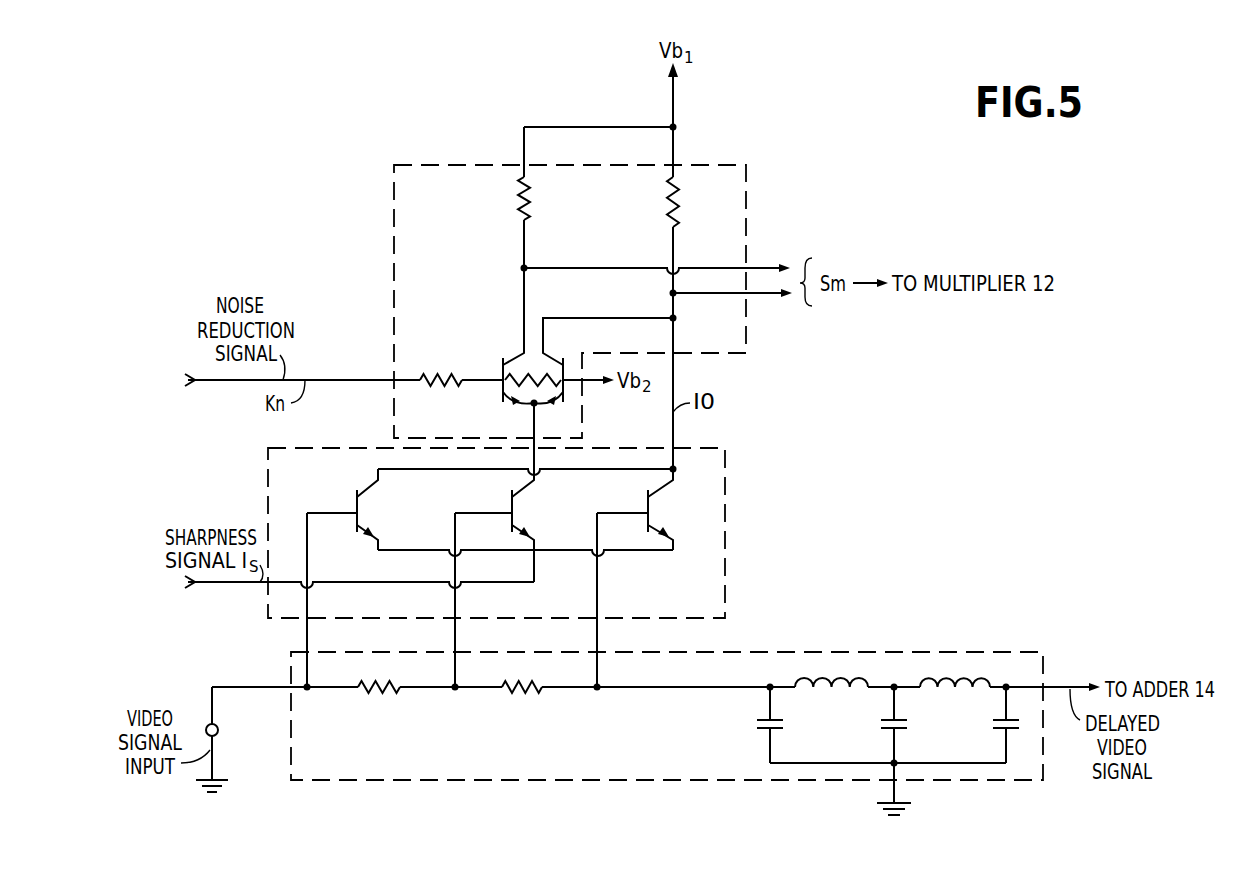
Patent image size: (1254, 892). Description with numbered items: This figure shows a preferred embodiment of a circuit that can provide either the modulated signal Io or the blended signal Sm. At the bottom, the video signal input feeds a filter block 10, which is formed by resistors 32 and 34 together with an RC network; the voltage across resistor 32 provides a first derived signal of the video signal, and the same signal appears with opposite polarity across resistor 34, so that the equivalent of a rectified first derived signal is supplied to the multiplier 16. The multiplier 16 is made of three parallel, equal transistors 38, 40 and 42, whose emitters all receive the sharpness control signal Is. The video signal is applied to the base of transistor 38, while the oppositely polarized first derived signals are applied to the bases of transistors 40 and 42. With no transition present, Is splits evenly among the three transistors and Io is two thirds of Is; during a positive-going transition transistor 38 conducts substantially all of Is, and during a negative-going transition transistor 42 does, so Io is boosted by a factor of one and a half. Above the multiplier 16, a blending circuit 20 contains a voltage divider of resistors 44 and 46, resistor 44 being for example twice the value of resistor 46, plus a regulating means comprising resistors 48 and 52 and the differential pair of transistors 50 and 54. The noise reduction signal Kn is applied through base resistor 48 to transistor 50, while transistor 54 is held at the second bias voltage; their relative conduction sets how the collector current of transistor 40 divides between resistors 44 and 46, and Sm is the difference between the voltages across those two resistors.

The filter block 10 is at (968, 652).
The multiplier 16 is at (722, 455).
The blending circuit 20 is at (746, 165).
The resistor 32 is at (372, 692).
The resistor 34 is at (512, 692).
The transistor 38 is at (362, 518).
The transistor 40 is at (517, 518).
The transistor 42 is at (652, 518).
The resistor 44 is at (531, 193).
The resistor 46 is at (680, 193).
The base resistor 48 is at (436, 378).
The transistor 50 is at (500, 397).
The resistor 52 is at (517, 370).
The transistor 54 is at (566, 386).